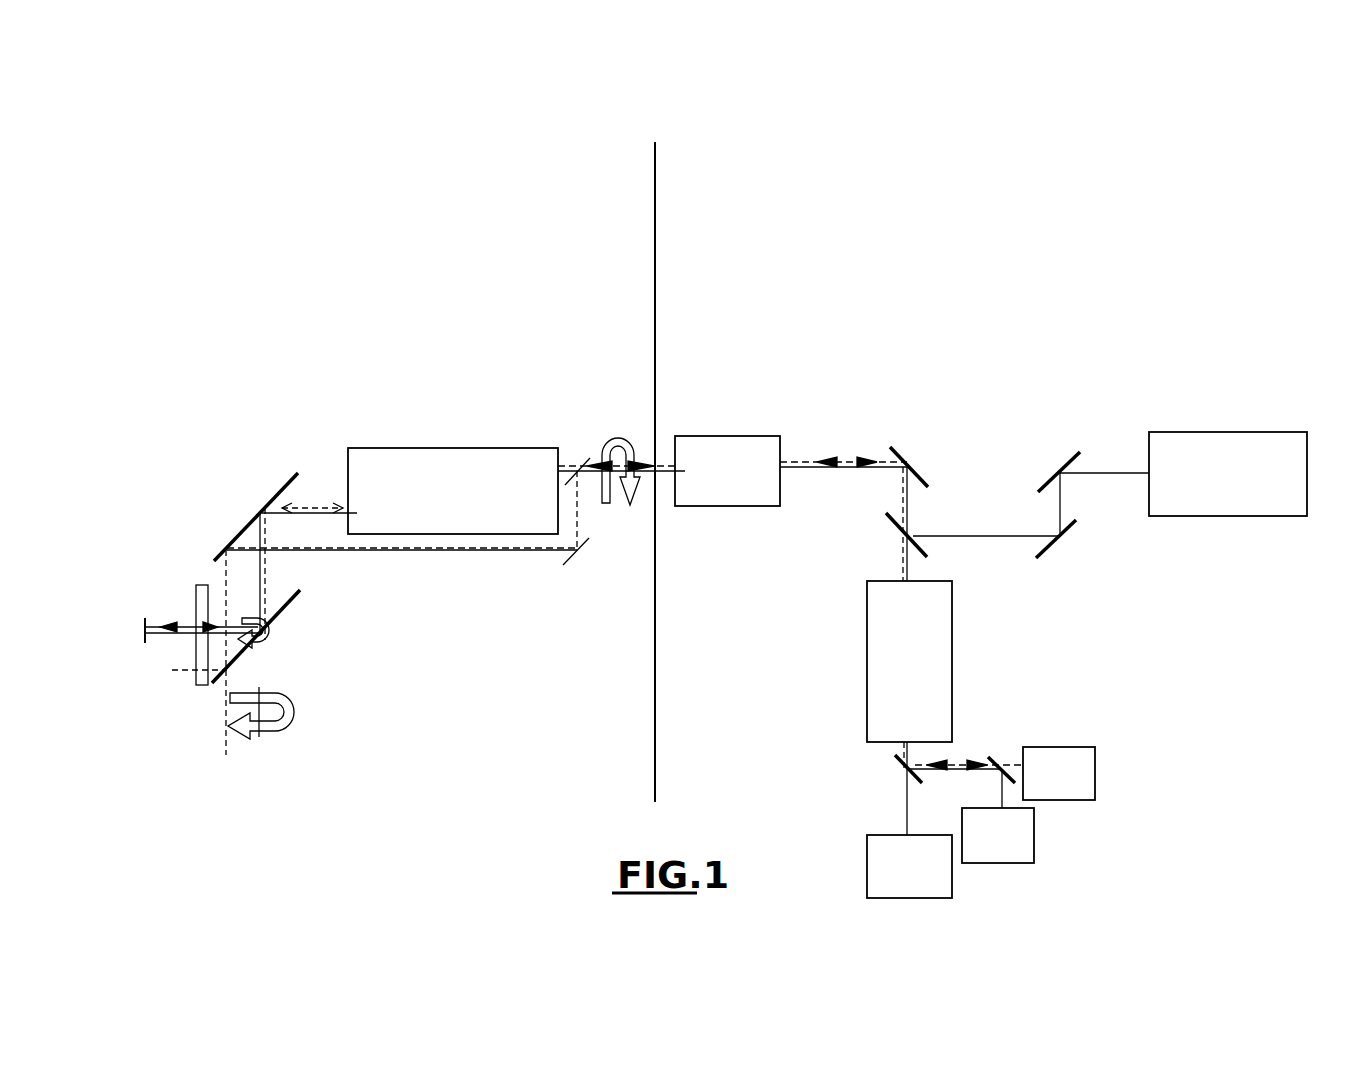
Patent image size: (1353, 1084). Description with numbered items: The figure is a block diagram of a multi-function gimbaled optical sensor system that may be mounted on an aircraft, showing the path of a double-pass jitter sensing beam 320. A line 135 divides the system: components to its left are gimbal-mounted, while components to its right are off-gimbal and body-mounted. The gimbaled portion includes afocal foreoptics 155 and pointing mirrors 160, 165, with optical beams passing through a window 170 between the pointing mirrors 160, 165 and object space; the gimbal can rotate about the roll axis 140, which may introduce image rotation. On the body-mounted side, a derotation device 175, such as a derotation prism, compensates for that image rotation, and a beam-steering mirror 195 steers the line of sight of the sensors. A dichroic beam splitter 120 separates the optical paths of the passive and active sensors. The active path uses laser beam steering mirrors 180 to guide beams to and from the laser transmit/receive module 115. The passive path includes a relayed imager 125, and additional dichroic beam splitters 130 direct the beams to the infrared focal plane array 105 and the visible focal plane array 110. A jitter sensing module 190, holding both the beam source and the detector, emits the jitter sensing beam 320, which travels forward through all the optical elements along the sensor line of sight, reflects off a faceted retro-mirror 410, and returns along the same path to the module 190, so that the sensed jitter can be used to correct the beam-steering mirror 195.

The infrared focal plane array 105 is at (909, 866).
The visible focal plane array 110 is at (998, 835).
The laser transmit/receive module 115 is at (1228, 474).
The dichroic beam splitter 120 is at (888, 518).
The relayed imager 125 is at (909, 661).
The dichroic beam splitters 130 is at (990, 757).
The line 135 is at (655, 253).
The roll axis 140 is at (610, 446).
The afocal foreoptics 155 is at (453, 491).
The pointing mirror 160 is at (300, 597).
The pointing mirror 165 is at (282, 484).
The window 170 is at (197, 585).
The derotation device 175 is at (727, 471).
The laser beam steering mirrors 180 is at (1072, 453).
The jitter sensing module 190 is at (1059, 773).
The beam-steering mirror 195 is at (903, 457).
The jitter sensing beam 320 is at (847, 462).
The faceted retro-mirror 410 is at (175, 629).